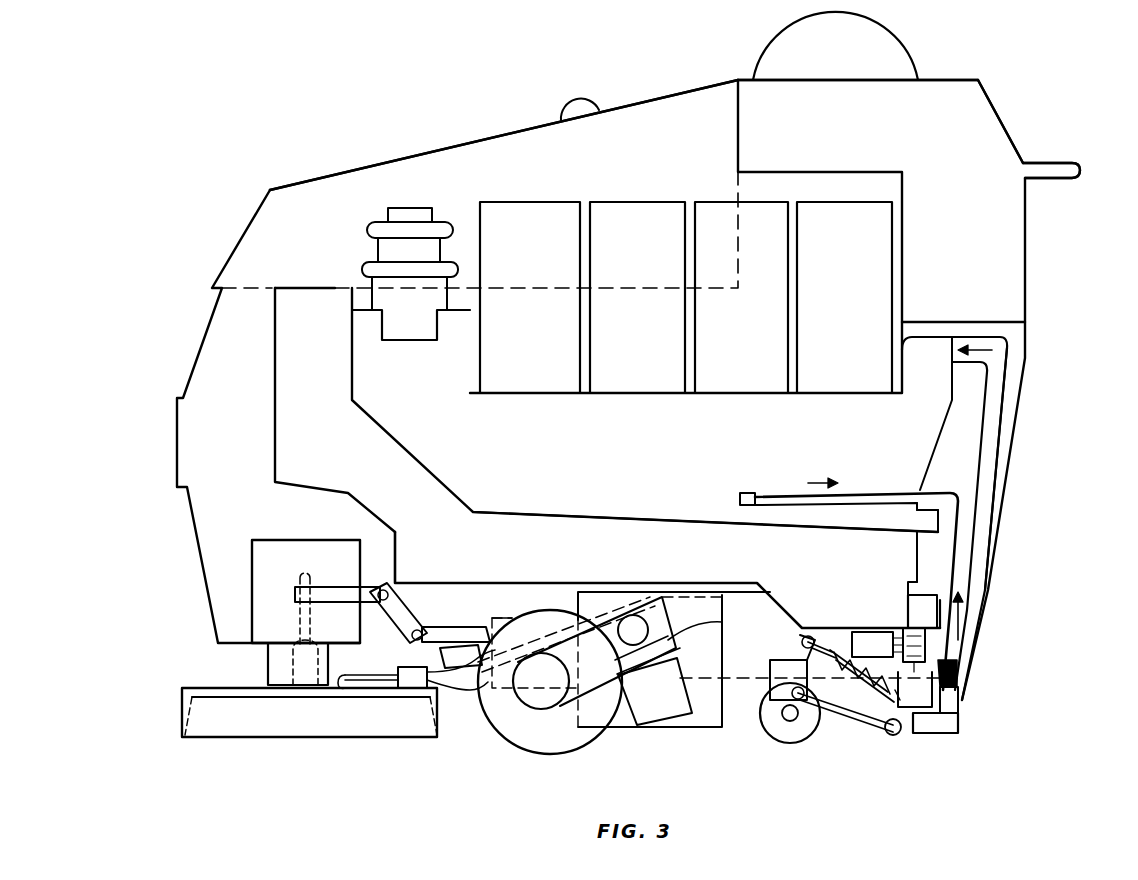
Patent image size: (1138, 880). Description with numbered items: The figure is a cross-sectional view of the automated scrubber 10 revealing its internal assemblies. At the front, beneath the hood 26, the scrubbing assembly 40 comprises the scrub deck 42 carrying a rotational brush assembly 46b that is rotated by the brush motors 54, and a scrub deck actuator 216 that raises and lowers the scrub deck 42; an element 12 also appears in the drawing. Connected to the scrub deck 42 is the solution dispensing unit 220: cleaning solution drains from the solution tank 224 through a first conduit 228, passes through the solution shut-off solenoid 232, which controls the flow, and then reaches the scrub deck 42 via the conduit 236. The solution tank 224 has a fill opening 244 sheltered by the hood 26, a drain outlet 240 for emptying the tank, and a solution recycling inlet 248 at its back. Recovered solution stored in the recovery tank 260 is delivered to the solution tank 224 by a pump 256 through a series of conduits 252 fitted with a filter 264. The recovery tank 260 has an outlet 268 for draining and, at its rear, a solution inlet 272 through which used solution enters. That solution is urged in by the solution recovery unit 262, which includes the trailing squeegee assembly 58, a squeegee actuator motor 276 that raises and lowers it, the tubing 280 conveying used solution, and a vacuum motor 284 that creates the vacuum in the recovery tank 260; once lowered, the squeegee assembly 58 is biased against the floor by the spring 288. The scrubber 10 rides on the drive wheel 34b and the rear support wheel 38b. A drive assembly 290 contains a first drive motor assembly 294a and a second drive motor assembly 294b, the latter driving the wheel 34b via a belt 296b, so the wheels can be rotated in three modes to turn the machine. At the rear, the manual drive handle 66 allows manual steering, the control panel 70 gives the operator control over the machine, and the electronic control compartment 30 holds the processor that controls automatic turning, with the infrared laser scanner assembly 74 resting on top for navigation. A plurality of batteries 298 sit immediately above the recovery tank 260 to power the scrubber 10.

The automated scrubber 10 is at (447, 107).
The sensor dome 12 is at (565, 103).
The hood 26 is at (328, 178).
The electronic control compartment 30 is at (922, 92).
The drive wheel 34b is at (545, 752).
The rear support wheel 38b is at (800, 742).
The scrubbing assembly 40 is at (185, 666).
The scrub deck 42 is at (182, 712).
The rotational brush assembly 46b is at (437, 712).
The brush motors 54 is at (251, 540).
The squeegee assembly 58 is at (960, 708).
The manual drive handle 66 is at (1079, 172).
The control panel 70 is at (1002, 118).
The infrared laser scanner assembly 74 is at (768, 58).
The scrub deck actuator 216 is at (428, 626).
The solution dispensing unit 220 is at (385, 632).
The solution tank 224 is at (275, 452).
The first conduit 228 is at (468, 690).
The solution shut-off solenoid 232 is at (405, 690).
The conduit 236 is at (345, 675).
The drain outlet 240 is at (920, 618).
The opening 244 is at (336, 296).
The solution recycling inlet 248 is at (914, 588).
The conduits 252 is at (945, 570).
The pump 256 is at (858, 630).
The recovery tank 260 is at (776, 392).
The solution recovery unit 262 is at (1004, 412).
The filter 264 is at (743, 493).
The outlet 268 is at (930, 518).
The solution inlet 272 is at (948, 345).
The squeegee actuator motor 276 is at (960, 656).
The tubing 280 is at (988, 502).
The vacuum motor 284 is at (432, 206).
The spring 288 is at (850, 700).
The drive assembly 290 is at (648, 597).
The first drive motor assembly 294a is at (700, 727).
The second drive motor assembly 294b is at (690, 640).
The belt 296b is at (590, 610).
The batteries 298 is at (650, 202).